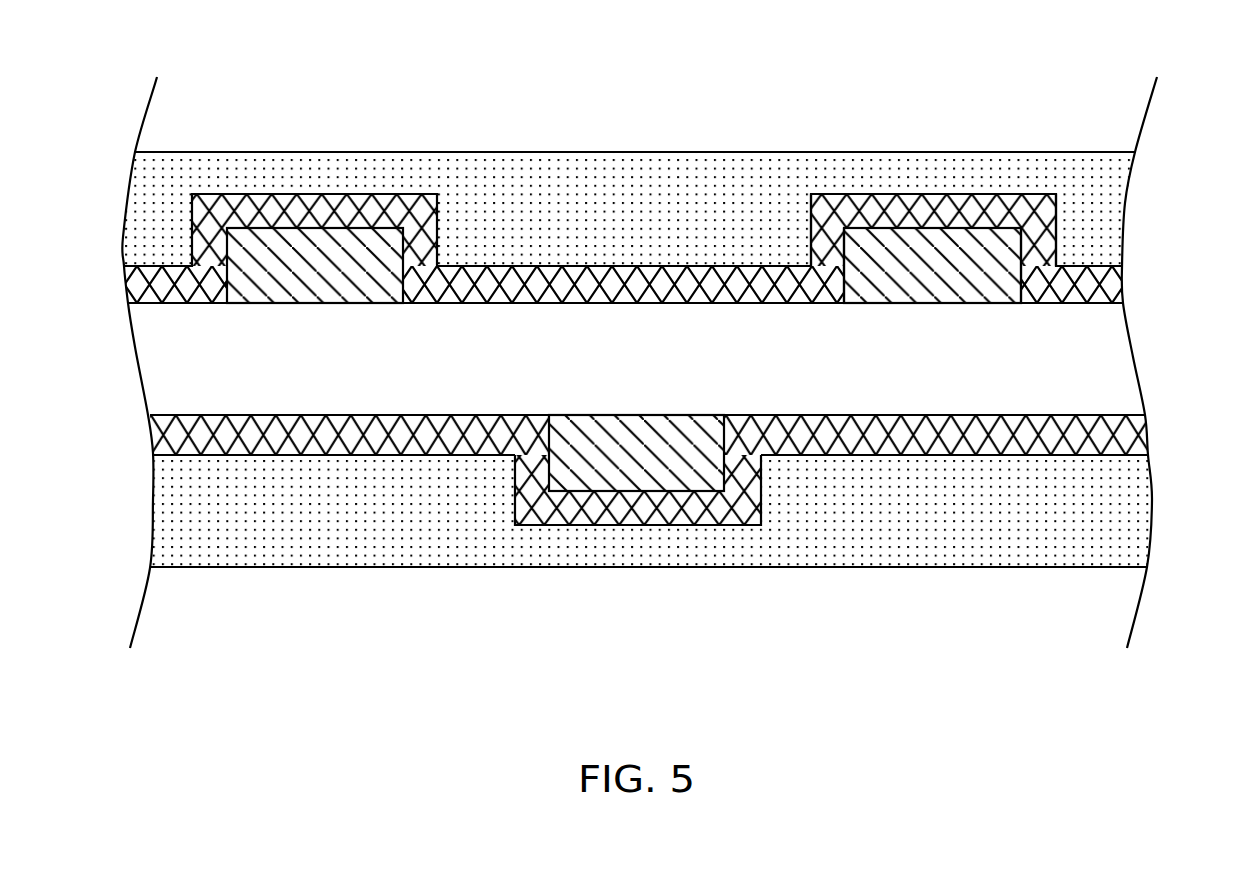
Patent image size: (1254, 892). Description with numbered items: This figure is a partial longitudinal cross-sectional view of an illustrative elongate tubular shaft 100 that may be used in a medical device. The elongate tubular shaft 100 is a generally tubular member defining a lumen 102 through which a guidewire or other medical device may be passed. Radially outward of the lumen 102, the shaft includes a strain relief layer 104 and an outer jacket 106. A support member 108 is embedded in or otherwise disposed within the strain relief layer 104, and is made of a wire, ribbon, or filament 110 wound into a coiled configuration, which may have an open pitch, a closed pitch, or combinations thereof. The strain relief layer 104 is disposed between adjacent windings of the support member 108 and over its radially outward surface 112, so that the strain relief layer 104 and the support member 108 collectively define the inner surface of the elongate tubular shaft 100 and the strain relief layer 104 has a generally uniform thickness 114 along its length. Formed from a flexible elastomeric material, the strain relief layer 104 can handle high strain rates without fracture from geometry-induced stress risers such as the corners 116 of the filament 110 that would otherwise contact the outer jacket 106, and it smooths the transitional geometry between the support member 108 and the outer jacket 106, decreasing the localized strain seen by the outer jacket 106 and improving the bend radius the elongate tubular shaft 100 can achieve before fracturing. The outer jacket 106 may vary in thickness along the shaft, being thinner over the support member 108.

The elongate tubular shaft 100 is at (632, 152).
The lumen 102 is at (1118, 367).
The strain relief layer 104 is at (210, 415).
The outer jacket 106 is at (190, 167).
The support member 108 is at (362, 300).
The filament 110 is at (263, 300).
The radially outward surface 112 is at (313, 227).
The thickness 114 is at (254, 505).
The corners 116 is at (847, 217).